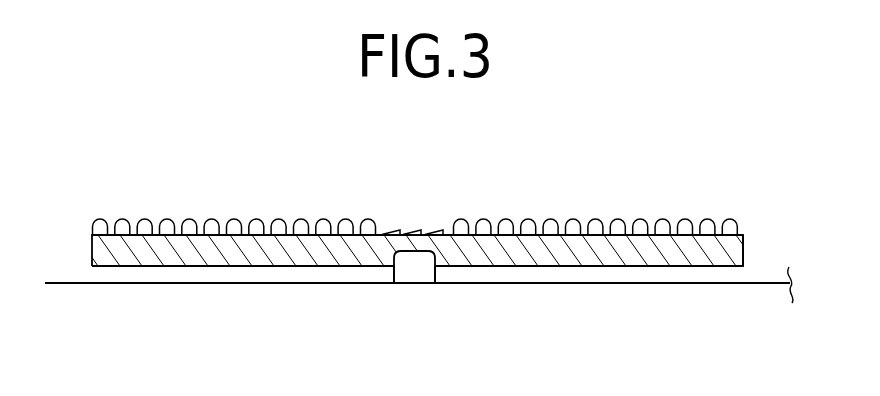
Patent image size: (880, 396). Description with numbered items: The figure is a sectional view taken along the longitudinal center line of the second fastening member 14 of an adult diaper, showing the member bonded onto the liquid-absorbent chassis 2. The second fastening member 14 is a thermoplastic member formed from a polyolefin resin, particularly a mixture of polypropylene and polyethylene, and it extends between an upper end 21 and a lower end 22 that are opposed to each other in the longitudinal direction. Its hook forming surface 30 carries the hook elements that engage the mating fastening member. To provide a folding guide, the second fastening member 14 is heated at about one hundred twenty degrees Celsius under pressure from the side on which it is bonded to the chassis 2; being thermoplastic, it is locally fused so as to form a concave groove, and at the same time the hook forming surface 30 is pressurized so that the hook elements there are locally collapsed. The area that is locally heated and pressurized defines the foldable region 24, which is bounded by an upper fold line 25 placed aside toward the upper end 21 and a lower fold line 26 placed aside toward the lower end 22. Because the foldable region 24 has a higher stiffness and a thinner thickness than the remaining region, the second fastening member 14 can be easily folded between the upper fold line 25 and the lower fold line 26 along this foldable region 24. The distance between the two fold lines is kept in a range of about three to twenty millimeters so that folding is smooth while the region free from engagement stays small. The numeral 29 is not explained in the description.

The liquid-absorbent chassis 2 is at (72, 282).
The second fastening member 14 is at (131, 174).
The upper end 21 is at (92, 247).
The lower end 22 is at (744, 252).
The foldable region 24 is at (416, 261).
The upper fold line 25 is at (394, 283).
The lower fold line 26 is at (435, 283).
The lower surface 29 is at (720, 268).
The hook forming surface 30 is at (707, 219).